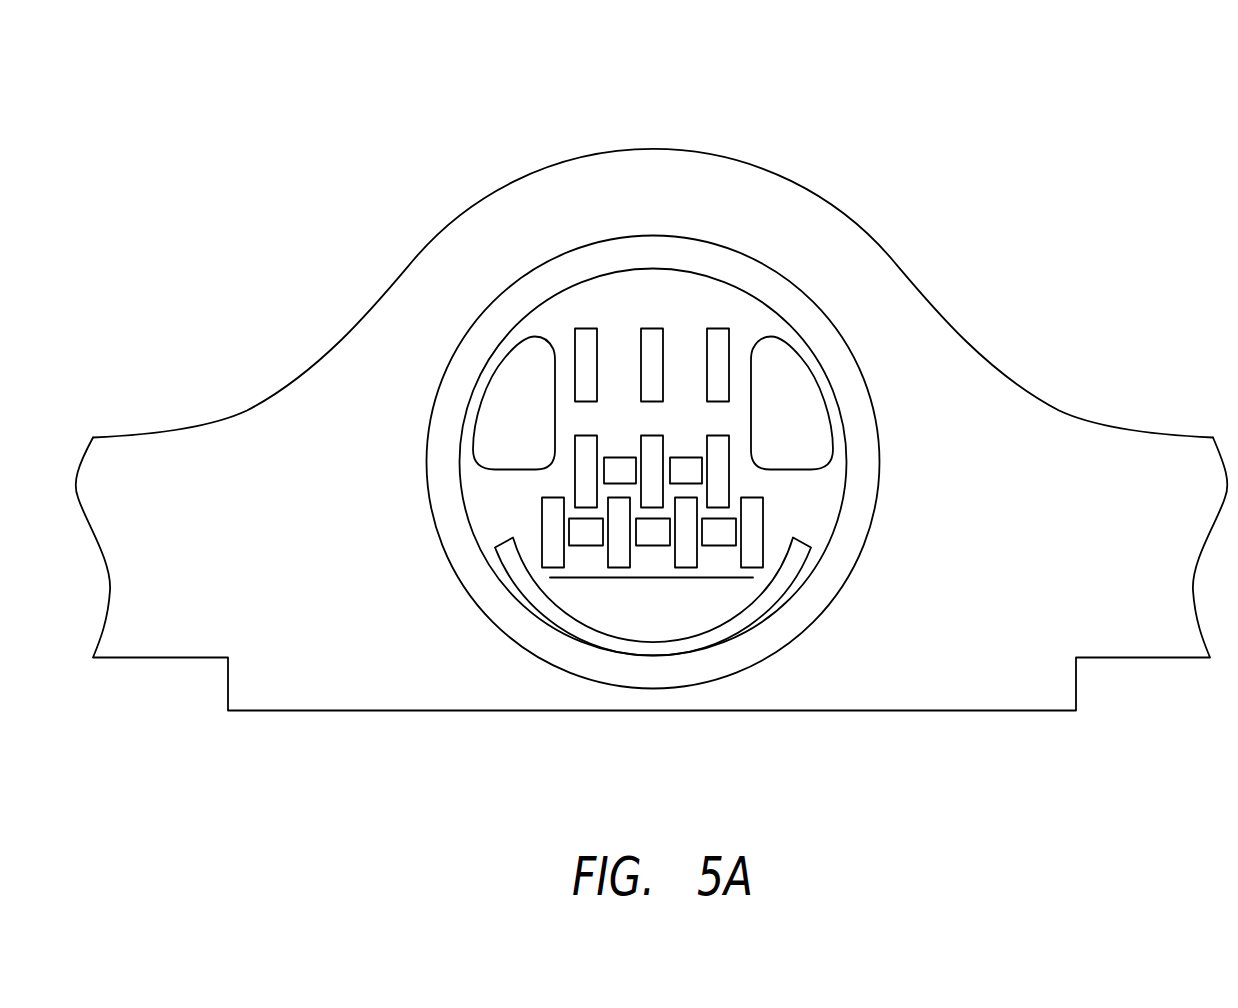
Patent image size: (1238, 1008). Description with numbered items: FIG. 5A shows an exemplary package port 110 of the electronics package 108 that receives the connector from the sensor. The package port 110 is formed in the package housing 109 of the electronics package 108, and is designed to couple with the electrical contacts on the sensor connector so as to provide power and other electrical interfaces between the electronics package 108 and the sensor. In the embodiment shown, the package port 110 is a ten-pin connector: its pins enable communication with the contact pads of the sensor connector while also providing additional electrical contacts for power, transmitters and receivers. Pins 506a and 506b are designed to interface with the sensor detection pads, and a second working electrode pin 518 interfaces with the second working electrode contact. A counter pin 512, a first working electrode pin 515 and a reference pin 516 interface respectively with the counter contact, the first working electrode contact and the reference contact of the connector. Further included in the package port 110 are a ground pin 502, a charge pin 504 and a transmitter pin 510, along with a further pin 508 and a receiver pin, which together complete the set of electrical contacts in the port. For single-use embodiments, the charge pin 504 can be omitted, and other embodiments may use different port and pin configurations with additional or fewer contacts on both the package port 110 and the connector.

The electronics package 108 is at (652, 370).
The package housing 109 is at (1143, 427).
The package port 110 is at (800, 337).
The ground pin 502 is at (553, 567).
The charge pin 504 is at (619, 567).
The pin 506a is at (718, 334).
The pin 506b is at (586, 334).
The pin 508 is at (686, 567).
The transmitter pin 510 is at (752, 567).
The counter pin 512 is at (574, 472).
The first working electrode pin 515 is at (651, 449).
The reference pin 516 is at (732, 472).
The second working electrode pin 518 is at (652, 334).